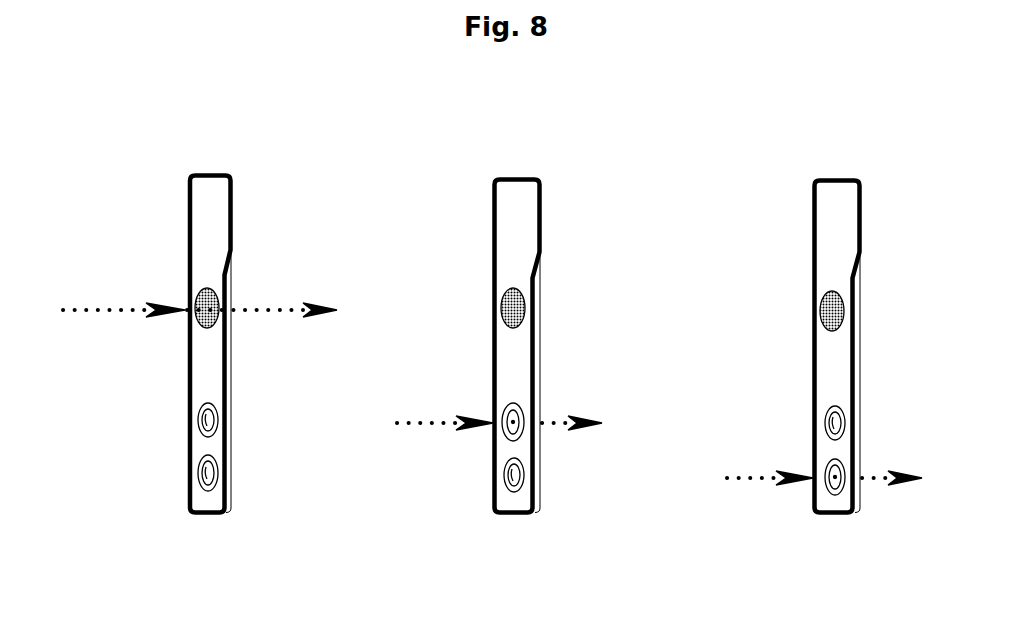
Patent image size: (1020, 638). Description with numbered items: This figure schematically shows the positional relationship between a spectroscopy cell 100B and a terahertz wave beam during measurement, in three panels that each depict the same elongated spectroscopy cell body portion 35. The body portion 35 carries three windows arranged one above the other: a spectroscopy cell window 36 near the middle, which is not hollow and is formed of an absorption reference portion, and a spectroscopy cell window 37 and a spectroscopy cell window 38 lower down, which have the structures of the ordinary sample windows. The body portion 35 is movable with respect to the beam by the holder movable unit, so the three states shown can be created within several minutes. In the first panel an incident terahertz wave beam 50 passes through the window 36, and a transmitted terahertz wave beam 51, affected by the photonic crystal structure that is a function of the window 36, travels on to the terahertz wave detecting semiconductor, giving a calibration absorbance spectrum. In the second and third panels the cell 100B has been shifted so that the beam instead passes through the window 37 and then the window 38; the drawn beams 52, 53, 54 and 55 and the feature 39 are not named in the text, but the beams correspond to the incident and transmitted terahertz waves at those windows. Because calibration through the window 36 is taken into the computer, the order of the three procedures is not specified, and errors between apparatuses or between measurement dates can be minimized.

The spectroscopy cell 100B is at (500, 341).
The spectroscopy cell body portion 35 is at (213, 238).
The spectroscopy cell window 36 is at (218, 300).
The spectroscopy cell window 37 is at (192, 418).
The spectroscopy cell window 38 is at (196, 465).
The partition wall 39 is at (232, 386).
The incident terahertz wave beam 50 is at (138, 318).
The transmitted terahertz wave beam 51 is at (300, 320).
The incident THz beam 52 is at (470, 412).
The transmitted THz beam 53 is at (578, 407).
The incident THz beam 54 is at (795, 468).
The transmitted THz beam 55 is at (898, 458).